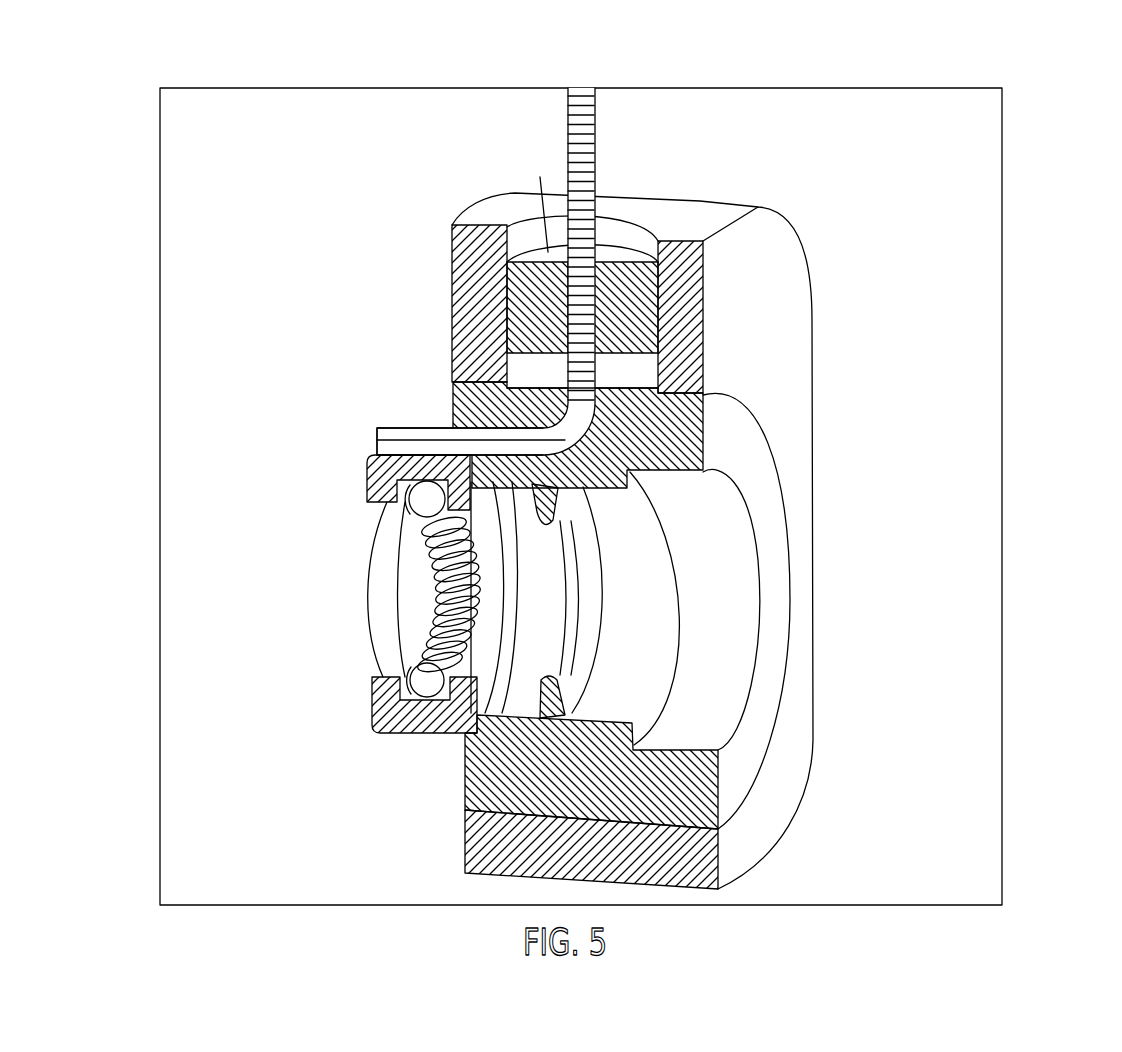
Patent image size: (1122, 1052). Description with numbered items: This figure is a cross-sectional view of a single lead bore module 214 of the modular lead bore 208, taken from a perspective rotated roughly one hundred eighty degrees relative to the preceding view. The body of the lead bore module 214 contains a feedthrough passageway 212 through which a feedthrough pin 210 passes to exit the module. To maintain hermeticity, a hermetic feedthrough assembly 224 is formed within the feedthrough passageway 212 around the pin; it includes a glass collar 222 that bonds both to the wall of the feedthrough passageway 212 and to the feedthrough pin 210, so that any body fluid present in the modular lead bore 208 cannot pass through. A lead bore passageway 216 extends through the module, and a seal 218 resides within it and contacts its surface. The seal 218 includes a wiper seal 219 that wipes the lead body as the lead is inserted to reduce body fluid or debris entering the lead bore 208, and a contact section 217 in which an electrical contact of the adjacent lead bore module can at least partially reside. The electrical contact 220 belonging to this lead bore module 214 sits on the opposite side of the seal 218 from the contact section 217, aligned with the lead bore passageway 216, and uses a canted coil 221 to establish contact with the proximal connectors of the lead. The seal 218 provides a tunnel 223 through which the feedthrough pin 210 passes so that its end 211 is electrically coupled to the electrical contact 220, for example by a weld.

The lead bore 208 is at (708, 572).
The feedthrough pin 210 is at (580, 98).
The end 211 is at (418, 438).
The feedthrough passageway 212 is at (640, 193).
The lead bore module 214 is at (390, 307).
The lead bore passageway 216 is at (748, 396).
The contact section 217 is at (700, 730).
The seal 218 is at (750, 446).
The wiper seal 219 is at (565, 652).
The electrical contact 220 is at (392, 470).
The canted coil 221 is at (427, 593).
The glass collar 222 is at (540, 307).
The tunnel 223 is at (490, 428).
The hermetic feedthrough assembly 224 is at (548, 252).